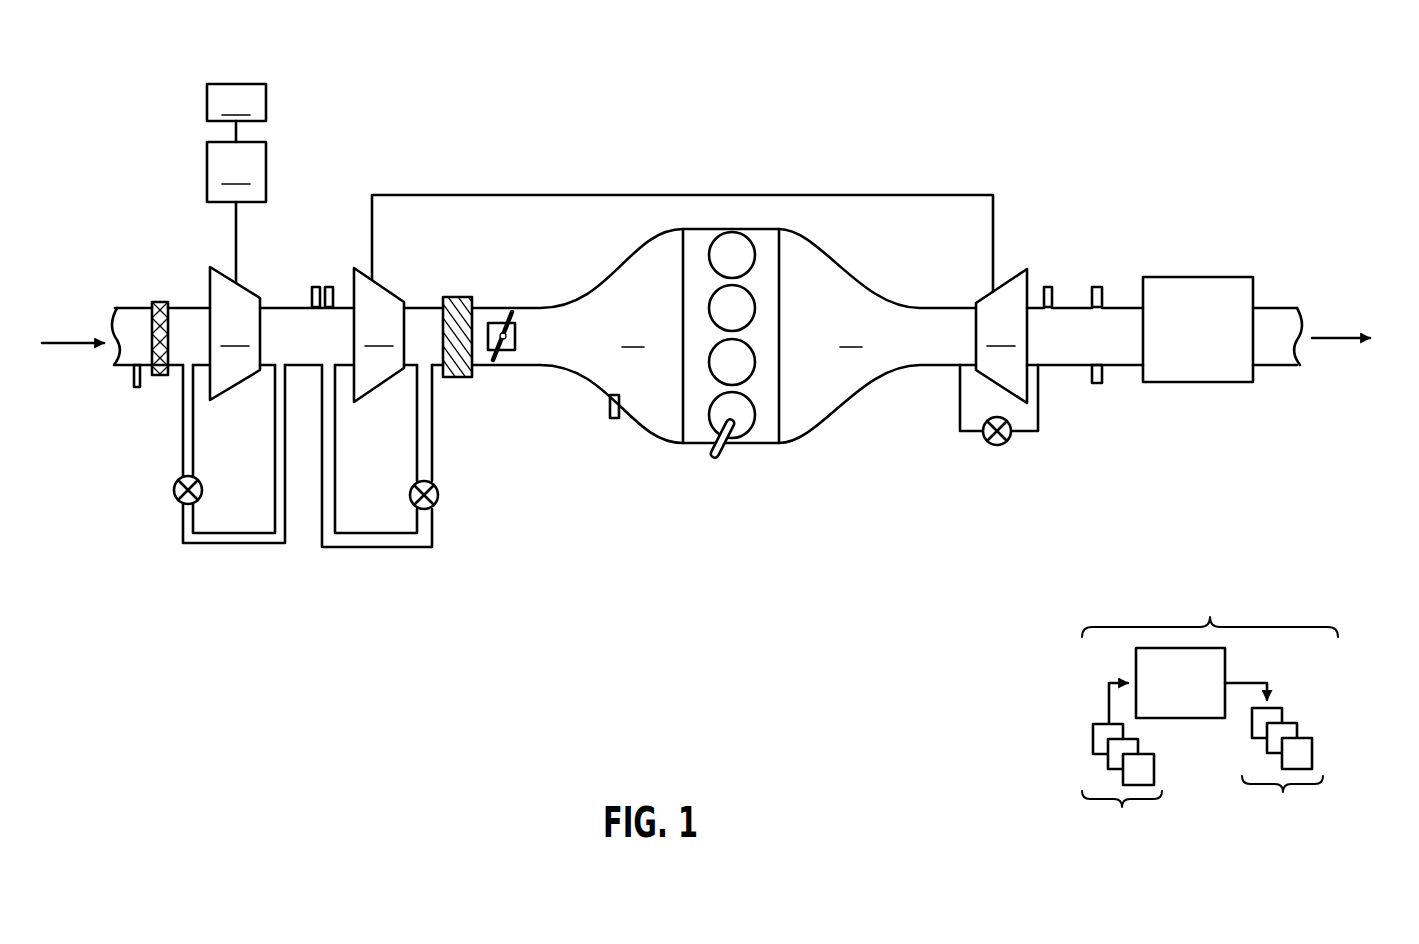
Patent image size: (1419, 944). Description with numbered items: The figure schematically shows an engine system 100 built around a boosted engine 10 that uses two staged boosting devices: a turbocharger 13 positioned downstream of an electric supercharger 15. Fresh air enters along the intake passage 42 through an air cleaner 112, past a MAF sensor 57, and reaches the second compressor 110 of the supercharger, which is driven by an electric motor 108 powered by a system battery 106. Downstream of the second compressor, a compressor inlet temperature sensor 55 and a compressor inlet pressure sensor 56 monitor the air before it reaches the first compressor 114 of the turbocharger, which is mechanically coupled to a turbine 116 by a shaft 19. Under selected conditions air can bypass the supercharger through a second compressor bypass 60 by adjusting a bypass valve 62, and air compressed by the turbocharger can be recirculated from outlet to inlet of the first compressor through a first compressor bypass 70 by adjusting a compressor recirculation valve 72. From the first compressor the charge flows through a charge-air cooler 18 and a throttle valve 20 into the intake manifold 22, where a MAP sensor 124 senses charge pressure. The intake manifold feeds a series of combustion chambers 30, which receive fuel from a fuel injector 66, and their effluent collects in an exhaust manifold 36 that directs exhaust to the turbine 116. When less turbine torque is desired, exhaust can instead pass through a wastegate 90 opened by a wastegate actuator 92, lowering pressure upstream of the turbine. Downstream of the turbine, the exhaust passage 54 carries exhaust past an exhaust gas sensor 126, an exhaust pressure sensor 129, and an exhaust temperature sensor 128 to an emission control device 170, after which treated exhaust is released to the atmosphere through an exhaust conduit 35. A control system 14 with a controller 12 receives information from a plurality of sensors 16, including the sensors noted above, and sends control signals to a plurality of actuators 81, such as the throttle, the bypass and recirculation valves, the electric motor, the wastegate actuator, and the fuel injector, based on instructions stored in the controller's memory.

The engine system 100 is at (1317, 58).
The electric supercharger 15 is at (100, 210).
The turbocharger 13 is at (443, 221).
The intake passage 42 is at (361, 336).
The air cleaner 112 is at (141, 327).
The MAF sensor 57 is at (152, 384).
The second compressor 110 is at (235, 333).
The electric motor 108 is at (236, 212).
The system battery 106 is at (236, 113).
The compressor inlet temperature sensor 55 is at (298, 278).
The compressor inlet pressure sensor 56 is at (322, 272).
The first compressor 114 is at (379, 335).
The shaft 19 is at (682, 243).
The second compressor bypass 60 is at (211, 454).
The bypass valve 62 is at (160, 483).
The first compressor bypass 70 is at (377, 456).
The compressor recirculation valve 72 is at (397, 487).
The charge-air cooler 18 is at (469, 331).
The throttle valve 20 is at (514, 336).
The intake manifold 22 is at (633, 336).
The manifold air pressure sensor 124 is at (597, 415).
The engine 10 is at (747, 336).
The combustion chambers 30 is at (744, 335).
The fuel injector 66 is at (738, 448).
The exhaust manifold 36 is at (877, 336).
The turbine 116 is at (1001, 336).
The wastegate 90 is at (979, 398).
The wastegate actuator 92 is at (984, 443).
The exhaust passage 54 is at (1085, 374).
The exhaust gas sensor 126 is at (1066, 277).
The exhaust pressure sensor 129 is at (1115, 284).
The exhaust temperature sensor 128 is at (1114, 385).
The emission control device 170 is at (1198, 318).
The exhaust conduit 35 is at (1330, 325).
The control system 14 is at (1210, 712).
The controller 12 is at (1180, 683).
The sensors 16 is at (1122, 766).
The actuators 81 is at (1274, 758).